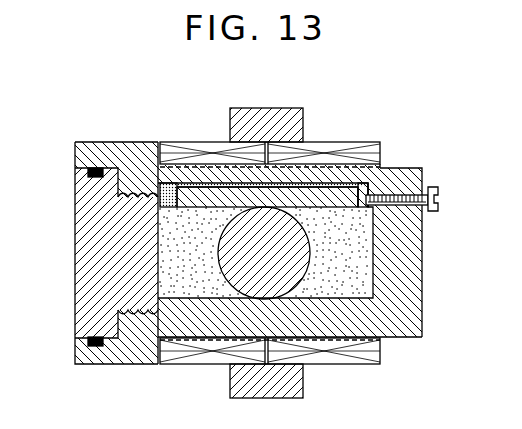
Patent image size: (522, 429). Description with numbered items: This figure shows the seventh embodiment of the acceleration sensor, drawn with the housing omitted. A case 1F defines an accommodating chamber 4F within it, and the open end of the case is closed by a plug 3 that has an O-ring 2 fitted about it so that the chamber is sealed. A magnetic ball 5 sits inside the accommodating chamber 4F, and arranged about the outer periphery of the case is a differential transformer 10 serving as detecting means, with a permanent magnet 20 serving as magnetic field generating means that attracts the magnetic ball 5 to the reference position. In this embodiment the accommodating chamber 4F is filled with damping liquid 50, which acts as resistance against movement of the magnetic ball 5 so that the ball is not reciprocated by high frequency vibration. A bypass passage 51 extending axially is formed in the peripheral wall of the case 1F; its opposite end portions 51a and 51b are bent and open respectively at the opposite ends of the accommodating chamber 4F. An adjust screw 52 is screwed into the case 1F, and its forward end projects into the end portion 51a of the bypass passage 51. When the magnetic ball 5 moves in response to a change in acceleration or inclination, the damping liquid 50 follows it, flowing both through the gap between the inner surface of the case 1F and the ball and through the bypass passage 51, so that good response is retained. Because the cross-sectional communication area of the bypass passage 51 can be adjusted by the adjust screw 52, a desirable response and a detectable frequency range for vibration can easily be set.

The O-ring 2 is at (88, 173).
The plug 3 is at (87, 244).
The magnetic ball 5 is at (206, 184).
The differential transformer 10 is at (366, 138).
The case 1F is at (404, 168).
The permanent magnet 20 is at (270, 108).
The bypass passage 51 is at (249, 171).
The end portion of bypass passage 51a is at (361, 209).
The end portion of bypass passage 51b is at (160, 224).
The adjust screw 52 is at (440, 197).
The accommodating chamber 4F is at (335, 267).
The damping liquid 50 is at (366, 250).